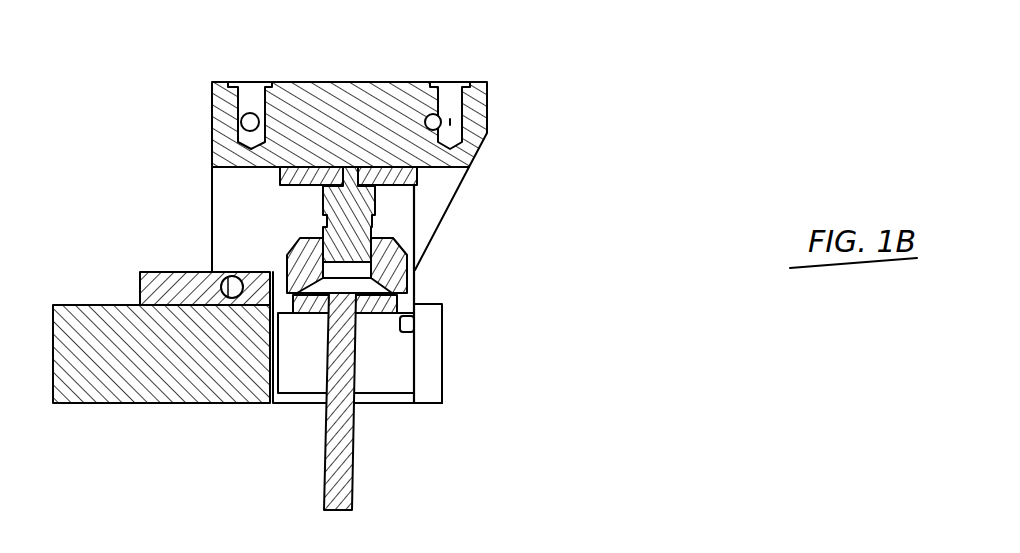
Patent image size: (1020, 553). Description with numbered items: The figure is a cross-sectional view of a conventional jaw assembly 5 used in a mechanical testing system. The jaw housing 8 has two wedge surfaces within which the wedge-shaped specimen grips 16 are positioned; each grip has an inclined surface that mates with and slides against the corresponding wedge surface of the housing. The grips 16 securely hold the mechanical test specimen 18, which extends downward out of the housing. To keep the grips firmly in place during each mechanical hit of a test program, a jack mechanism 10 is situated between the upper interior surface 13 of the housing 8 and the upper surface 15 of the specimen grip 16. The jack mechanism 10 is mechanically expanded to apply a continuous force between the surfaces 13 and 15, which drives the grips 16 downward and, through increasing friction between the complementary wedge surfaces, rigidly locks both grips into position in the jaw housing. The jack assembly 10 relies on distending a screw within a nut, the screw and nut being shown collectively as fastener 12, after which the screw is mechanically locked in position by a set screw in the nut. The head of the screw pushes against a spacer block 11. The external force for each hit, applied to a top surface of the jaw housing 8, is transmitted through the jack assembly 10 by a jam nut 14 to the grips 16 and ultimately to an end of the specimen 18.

The jaw assembly 5 is at (130, 168).
The jaw housing 8 is at (387, 100).
The jack mechanism 10 is at (290, 211).
The spacer block 11 is at (383, 176).
The screw and nut 12 is at (400, 245).
The upper interior surface 13 is at (416, 184).
The jam nut 14 is at (400, 299).
The upper surface 15 is at (443, 335).
The wedge-shaped specimen grip 16 is at (390, 360).
The mechanical test specimen 18 is at (353, 463).